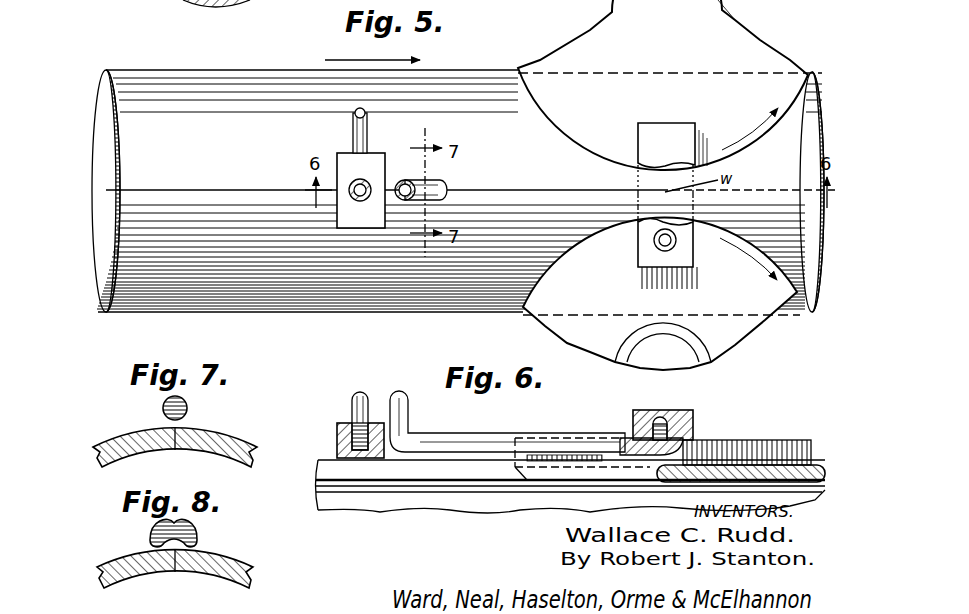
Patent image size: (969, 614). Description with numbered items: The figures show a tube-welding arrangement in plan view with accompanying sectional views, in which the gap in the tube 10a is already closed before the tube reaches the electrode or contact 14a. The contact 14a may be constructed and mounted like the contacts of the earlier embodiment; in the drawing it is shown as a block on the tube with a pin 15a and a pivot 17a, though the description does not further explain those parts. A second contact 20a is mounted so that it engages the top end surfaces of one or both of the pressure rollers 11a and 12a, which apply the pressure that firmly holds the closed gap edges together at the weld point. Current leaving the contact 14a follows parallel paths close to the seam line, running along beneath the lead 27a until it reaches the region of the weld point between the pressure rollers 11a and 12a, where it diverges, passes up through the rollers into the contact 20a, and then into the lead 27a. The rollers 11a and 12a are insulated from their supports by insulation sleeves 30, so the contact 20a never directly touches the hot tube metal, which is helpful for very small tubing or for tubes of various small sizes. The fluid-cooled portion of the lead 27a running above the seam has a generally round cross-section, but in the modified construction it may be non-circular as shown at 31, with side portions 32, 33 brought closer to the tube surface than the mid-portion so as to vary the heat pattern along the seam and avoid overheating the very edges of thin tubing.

In FIG. 5, the tube 10a is at (338, 316).
In FIG. 6, the tube 10a is at (375, 511).
In FIG. 7, the tube 10a is at (117, 440).
In FIG. 8, the tube 10a is at (108, 566).
In FIG. 5, the pressure roller 11a is at (577, 328).
In FIG. 5, the pressure roller 12a is at (578, 50).
In FIG. 6, the pressure roller 12a is at (765, 440).
In FIG. 5, the contact 14a is at (384, 158).
In FIG. 6, the contact 14a is at (337, 428).
In FIG. 5, the pin 15a is at (353, 125).
In FIG. 5, the pivot pin 17a is at (374, 176).
In FIG. 6, the pivot pin 17a is at (356, 400).
In FIG. 5, the contact 20a is at (666, 128).
In FIG. 6, the contact 20a is at (696, 418).
In FIG. 5, the lead 27a is at (440, 184).
In FIG. 6, the lead 27a is at (456, 437).
In FIG. 7, the lead 27a is at (188, 402).
In FIG. 5, the insulation sleeve 30 is at (722, 370).
In FIG. 8, the non-circular cross-section 31 is at (200, 528).
In FIG. 8, the side portion 32 is at (150, 540).
In FIG. 8, the side portion 33 is at (198, 543).